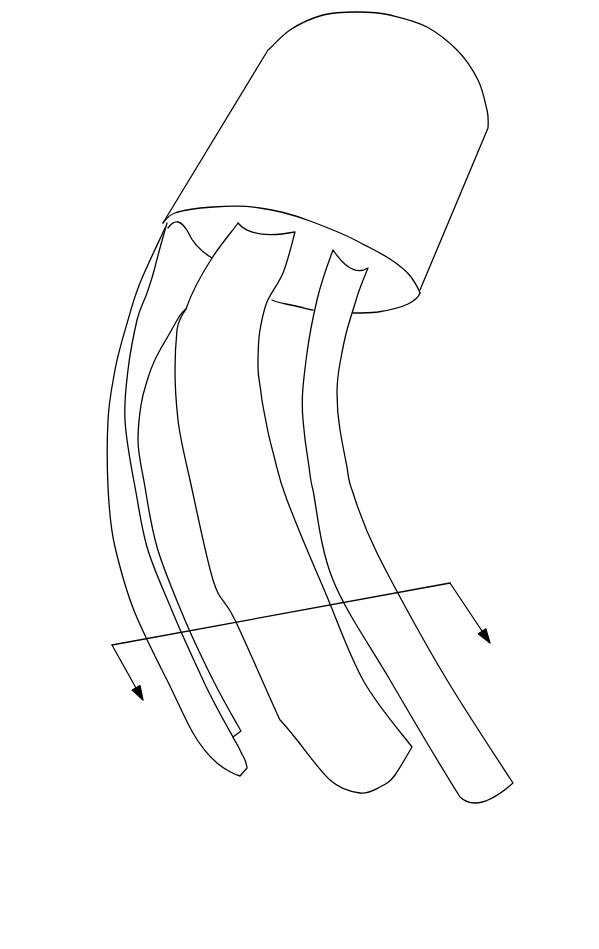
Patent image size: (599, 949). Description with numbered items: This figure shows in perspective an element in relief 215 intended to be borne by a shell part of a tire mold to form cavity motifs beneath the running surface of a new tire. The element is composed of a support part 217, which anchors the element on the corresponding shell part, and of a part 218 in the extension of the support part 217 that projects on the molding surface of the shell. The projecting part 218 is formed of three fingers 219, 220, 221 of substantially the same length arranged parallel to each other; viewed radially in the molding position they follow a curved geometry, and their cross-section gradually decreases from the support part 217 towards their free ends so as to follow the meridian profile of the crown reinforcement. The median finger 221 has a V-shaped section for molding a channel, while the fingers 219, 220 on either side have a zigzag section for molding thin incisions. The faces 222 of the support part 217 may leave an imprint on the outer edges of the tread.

The element in relief 215 is at (135, 152).
The support part 217 is at (242, 98).
The projecting part 218 is at (113, 367).
The finger 219 is at (125, 586).
The finger 220 is at (493, 755).
The median finger 221 is at (383, 783).
The face 222 is at (408, 304).